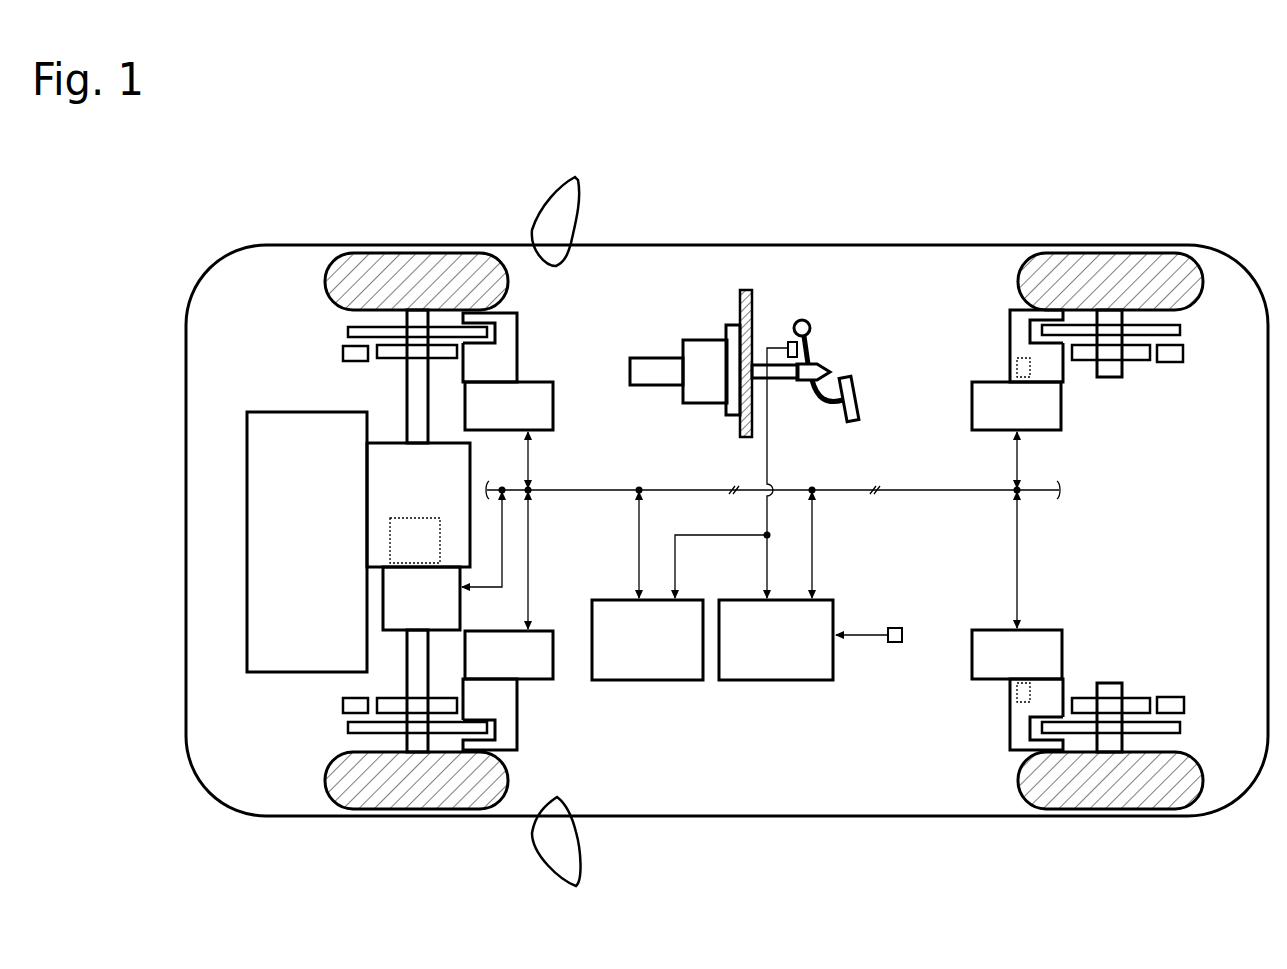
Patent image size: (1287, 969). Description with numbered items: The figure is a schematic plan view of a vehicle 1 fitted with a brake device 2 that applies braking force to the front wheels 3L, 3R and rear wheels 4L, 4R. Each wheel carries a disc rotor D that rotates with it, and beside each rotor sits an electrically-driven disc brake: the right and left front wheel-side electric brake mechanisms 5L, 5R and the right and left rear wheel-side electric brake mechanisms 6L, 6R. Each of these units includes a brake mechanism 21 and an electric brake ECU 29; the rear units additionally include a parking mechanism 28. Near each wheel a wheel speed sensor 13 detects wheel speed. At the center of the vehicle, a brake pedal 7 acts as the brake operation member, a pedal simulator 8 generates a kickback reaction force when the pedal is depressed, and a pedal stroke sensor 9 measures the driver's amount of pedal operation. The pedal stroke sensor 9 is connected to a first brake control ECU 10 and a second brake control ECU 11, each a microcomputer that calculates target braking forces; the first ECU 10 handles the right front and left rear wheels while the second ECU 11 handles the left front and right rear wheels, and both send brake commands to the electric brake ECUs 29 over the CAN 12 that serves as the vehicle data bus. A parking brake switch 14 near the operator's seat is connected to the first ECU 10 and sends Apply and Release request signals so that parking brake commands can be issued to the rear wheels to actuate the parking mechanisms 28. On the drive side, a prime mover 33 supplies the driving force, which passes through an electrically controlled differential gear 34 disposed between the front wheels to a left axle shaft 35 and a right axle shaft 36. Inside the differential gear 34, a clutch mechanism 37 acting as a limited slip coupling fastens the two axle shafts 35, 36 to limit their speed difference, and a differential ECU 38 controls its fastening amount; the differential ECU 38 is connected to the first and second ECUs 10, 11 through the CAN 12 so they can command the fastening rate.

The vehicle 1 is at (841, 214).
The brake device 2 is at (879, 278).
The right-side front wheel 3R is at (416, 274).
The left-side front wheel 3L is at (416, 790).
The right-side rear wheel 4R is at (1110, 276).
The left-side rear wheel 4L is at (1114, 792).
The right front wheel-side electric brake mechanism 5R is at (522, 319).
The left front wheel-side electric brake mechanism 5L is at (522, 727).
The right rear wheel-side electric brake mechanism 6R is at (1005, 319).
The left rear wheel-side electric brake mechanism 6L is at (1005, 736).
The brake pedal 7 is at (859, 400).
The pedal simulator 8 is at (657, 362).
The pedal stroke sensor 9 is at (792, 340).
The first brake control ECU 10 is at (790, 681).
The second brake control ECU 11 is at (650, 681).
The CAN 12 is at (604, 488).
The wheel speed sensor 13 is at (343, 353).
The parking brake switch 14 is at (894, 626).
The brake mechanism 21 is at (518, 352).
The parking mechanism 28 is at (1017, 368).
The electric brake ECU 29 is at (554, 400).
The prime mover 33 is at (256, 541).
The electrically controlled differential gear 34 is at (471, 466).
The left axle shaft 35 is at (413, 672).
The right axle shaft 36 is at (410, 388).
The clutch mechanism 37 is at (404, 517).
The electrically controlled differential gear control ECU 38 is at (462, 612).
The disc rotor D is at (348, 332).